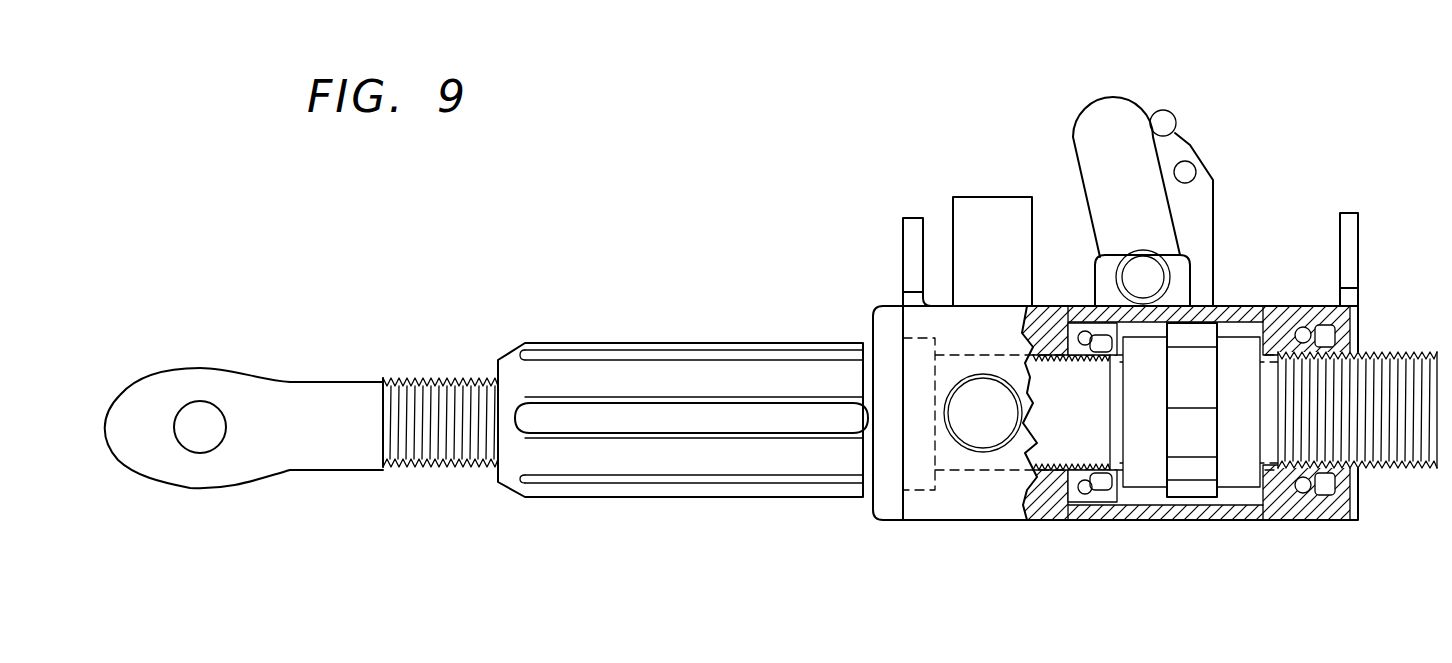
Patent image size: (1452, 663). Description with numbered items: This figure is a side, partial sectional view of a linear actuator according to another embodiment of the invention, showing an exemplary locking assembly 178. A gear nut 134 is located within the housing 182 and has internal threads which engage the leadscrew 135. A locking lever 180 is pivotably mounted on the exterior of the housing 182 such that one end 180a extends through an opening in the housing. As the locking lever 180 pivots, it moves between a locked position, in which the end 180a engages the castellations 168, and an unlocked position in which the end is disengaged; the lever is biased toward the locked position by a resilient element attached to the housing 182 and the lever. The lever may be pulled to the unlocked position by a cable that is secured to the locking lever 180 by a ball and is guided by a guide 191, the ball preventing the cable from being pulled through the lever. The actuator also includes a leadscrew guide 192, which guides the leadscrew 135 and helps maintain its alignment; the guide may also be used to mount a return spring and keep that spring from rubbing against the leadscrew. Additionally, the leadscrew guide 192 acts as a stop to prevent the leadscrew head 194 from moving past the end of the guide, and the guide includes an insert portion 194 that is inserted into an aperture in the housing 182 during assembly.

The gear nut 134 is at (1140, 483).
The leadscrew 135 is at (443, 392).
The castellations 168 is at (1200, 490).
The locking assembly 178 is at (1341, 96).
The locking lever 180 is at (1108, 128).
The end of locking lever 180a is at (1215, 292).
The housing 182 is at (923, 508).
The guide 191 is at (912, 218).
The leadscrew guide 192 is at (560, 342).
The leadscrew head 194 is at (200, 380).